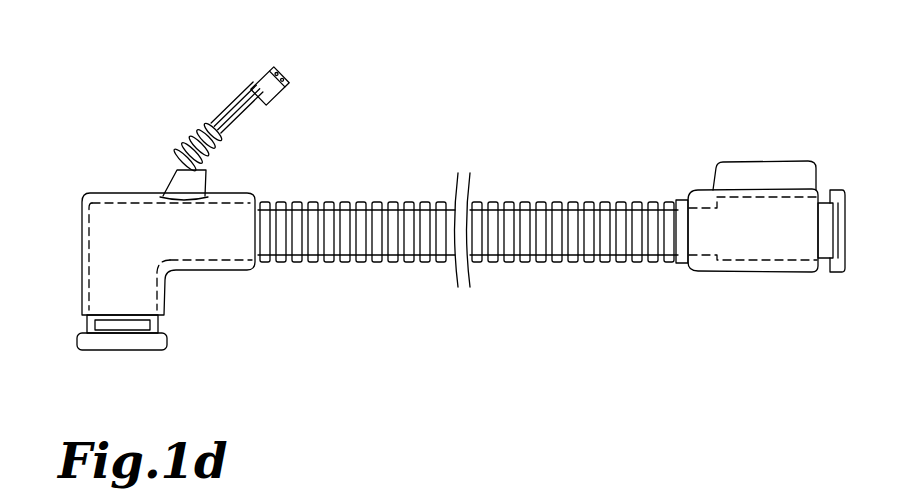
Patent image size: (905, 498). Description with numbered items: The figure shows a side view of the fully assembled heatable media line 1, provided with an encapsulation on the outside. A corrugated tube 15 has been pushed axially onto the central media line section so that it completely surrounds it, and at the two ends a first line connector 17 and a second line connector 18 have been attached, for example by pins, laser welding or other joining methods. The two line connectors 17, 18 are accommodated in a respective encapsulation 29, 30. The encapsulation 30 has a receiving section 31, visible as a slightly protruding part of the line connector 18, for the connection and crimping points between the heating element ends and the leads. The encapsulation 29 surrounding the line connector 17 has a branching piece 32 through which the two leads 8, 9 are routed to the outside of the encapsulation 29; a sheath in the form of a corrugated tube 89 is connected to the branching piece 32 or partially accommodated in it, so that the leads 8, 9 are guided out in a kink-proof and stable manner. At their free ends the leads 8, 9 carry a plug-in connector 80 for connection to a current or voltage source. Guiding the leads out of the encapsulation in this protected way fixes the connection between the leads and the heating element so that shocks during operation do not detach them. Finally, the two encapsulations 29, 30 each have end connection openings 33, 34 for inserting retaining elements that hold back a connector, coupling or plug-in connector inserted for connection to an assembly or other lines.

The heatable media line 1 is at (532, 126).
The lead 8 is at (223, 120).
The lead 9 is at (237, 107).
The corrugated tube 15 is at (572, 203).
The first line connector 17 is at (130, 225).
The second line connector 18 is at (715, 218).
The encapsulation 29 is at (85, 193).
The encapsulation 30 is at (722, 200).
The receiving section 31 is at (787, 173).
The branching piece 32 is at (208, 185).
The end connection opening 33 is at (90, 332).
The end connection opening 34 is at (828, 260).
The plug-in connector 80 is at (289, 95).
The corrugated tube 89 is at (182, 157).